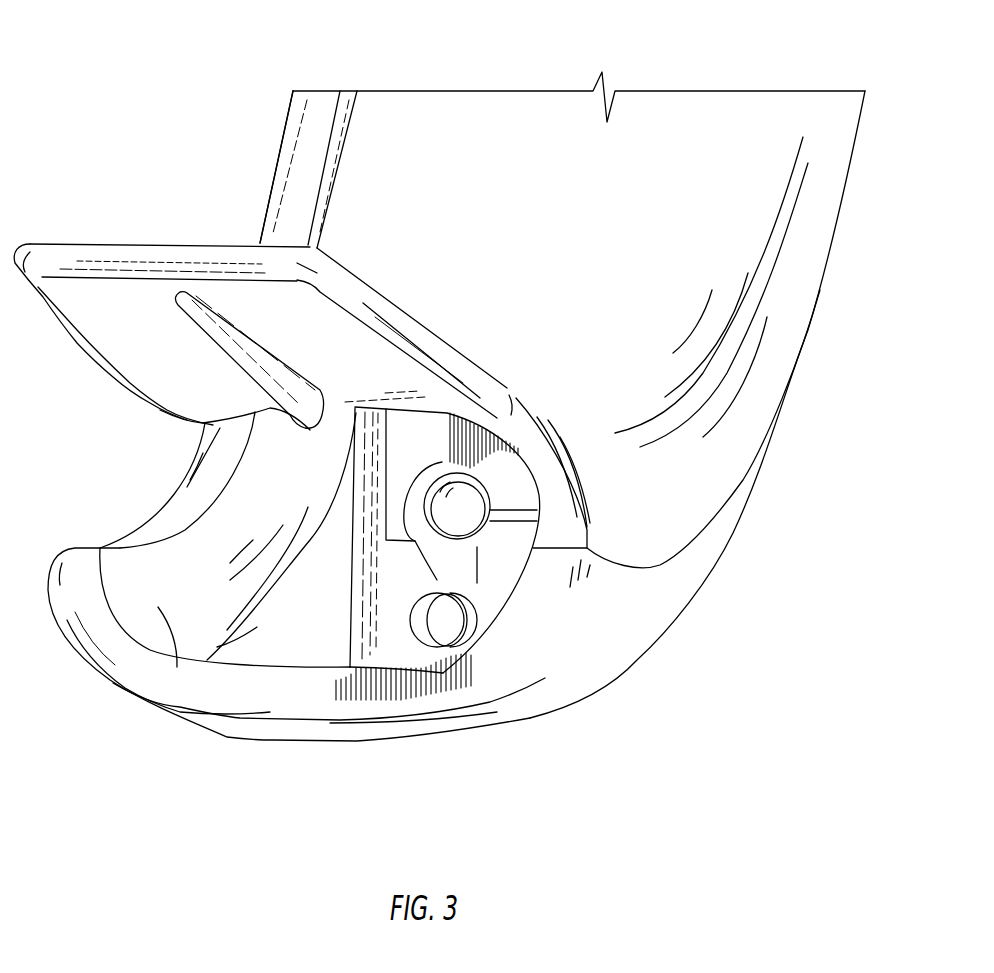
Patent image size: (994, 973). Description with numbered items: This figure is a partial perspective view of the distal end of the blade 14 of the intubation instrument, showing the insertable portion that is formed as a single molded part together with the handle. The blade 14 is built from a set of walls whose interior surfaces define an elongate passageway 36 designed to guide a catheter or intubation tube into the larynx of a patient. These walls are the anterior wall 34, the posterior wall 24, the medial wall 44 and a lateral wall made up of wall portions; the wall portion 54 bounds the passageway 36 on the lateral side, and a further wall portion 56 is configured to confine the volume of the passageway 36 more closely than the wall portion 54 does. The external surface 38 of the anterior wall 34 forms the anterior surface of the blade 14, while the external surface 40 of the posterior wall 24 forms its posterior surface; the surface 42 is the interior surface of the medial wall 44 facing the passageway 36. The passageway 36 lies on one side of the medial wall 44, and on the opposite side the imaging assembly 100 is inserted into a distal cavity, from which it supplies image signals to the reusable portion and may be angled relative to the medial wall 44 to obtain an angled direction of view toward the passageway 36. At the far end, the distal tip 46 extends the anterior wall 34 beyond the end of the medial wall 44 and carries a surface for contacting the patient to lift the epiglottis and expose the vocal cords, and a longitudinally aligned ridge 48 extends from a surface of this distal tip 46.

The blade 14 is at (245, 178).
The posterior wall 24 is at (227, 733).
The anterior wall 34 is at (682, 148).
The passageway 36 is at (287, 514).
The surface 38 is at (485, 222).
The surface 40 is at (358, 742).
The surface 42 is at (333, 477).
The medial wall 44 is at (390, 633).
The distal tip 46 is at (78, 353).
The ridge 48 is at (307, 393).
The wall portion 54 is at (197, 453).
The wall portion 56 is at (177, 667).
The imaging assembly 100 is at (465, 598).